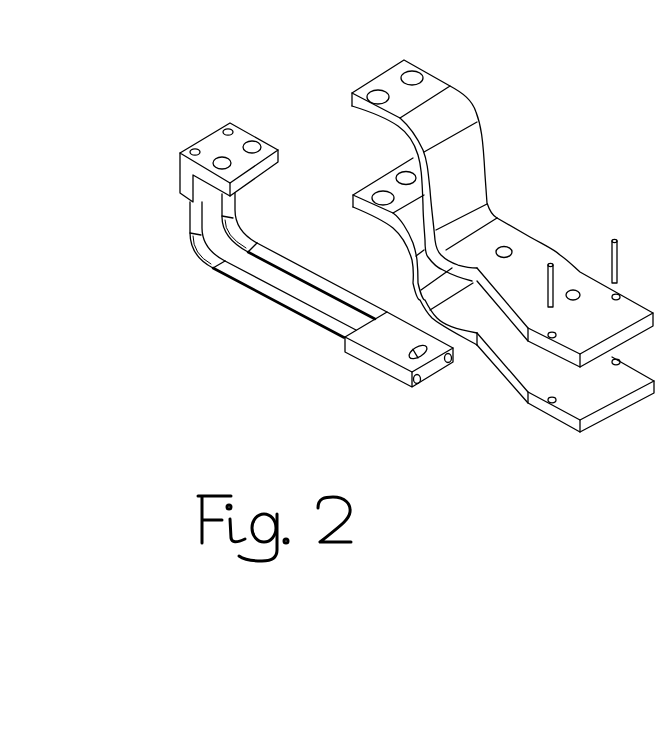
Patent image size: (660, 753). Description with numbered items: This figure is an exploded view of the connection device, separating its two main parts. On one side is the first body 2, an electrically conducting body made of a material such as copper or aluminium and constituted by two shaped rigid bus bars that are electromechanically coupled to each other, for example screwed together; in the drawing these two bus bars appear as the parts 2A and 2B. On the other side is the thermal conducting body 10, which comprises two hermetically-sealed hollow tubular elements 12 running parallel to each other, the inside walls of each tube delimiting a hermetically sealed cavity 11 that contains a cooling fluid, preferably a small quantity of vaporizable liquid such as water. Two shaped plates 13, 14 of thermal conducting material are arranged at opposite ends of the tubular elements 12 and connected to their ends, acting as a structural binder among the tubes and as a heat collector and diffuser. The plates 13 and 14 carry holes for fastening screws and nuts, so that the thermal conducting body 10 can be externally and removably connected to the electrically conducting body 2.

The first body 2 is at (486, 122).
The upper mounting plate of bracket 2A is at (528, 248).
The lower mounting plate of bracket 2B is at (527, 370).
The thermal conducting body 10 is at (185, 278).
The hermetically sealed cavity 11 is at (322, 290).
The hermetically-sealed hollow tubular element 12 is at (286, 256).
The shaped plate 13 is at (212, 150).
The shaped plate 14 is at (393, 348).